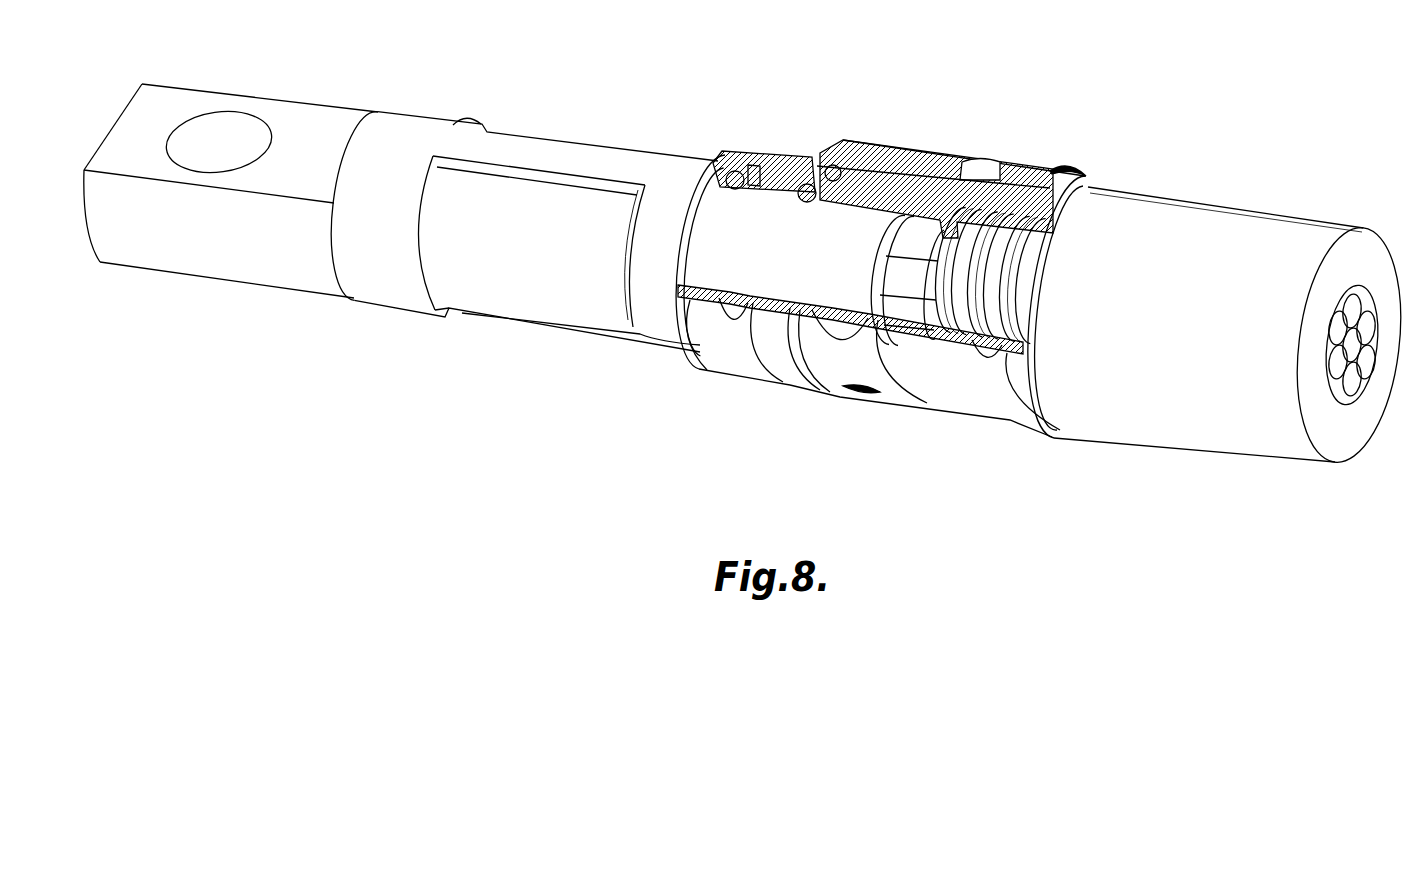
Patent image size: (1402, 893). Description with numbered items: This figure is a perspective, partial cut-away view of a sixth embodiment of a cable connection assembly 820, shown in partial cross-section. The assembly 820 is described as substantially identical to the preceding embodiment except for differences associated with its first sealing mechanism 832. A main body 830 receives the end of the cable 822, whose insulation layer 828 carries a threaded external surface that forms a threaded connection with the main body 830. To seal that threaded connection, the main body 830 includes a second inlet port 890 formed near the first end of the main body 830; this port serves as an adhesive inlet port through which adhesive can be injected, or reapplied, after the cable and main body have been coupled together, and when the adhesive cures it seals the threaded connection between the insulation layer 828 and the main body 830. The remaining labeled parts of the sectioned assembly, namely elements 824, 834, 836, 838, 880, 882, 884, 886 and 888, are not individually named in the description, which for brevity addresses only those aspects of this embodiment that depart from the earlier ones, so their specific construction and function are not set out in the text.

The cable connection assembly 820 is at (906, 237).
The cable 822 is at (1228, 300).
The connector body 824 is at (458, 108).
The insulation layer 828 is at (1247, 222).
The main body 830 is at (770, 164).
The first sealing mechanism 832 is at (1058, 240).
The flange 834 is at (696, 186).
The end ring 836 is at (1037, 154).
The O-ring seal 838 is at (805, 184).
The lower shell 880 is at (707, 360).
The O-ring seal 882 is at (724, 172).
The outer sleeve 884 is at (868, 175).
The retaining ring 886 is at (740, 168).
The O-ring seal 888 is at (841, 167).
The second inlet port 890 is at (975, 355).